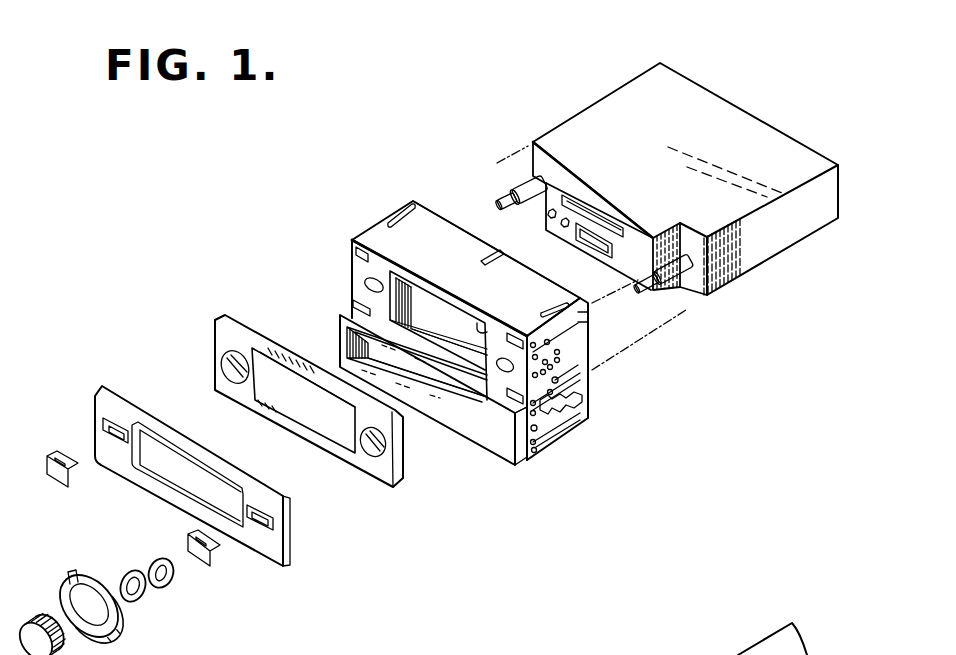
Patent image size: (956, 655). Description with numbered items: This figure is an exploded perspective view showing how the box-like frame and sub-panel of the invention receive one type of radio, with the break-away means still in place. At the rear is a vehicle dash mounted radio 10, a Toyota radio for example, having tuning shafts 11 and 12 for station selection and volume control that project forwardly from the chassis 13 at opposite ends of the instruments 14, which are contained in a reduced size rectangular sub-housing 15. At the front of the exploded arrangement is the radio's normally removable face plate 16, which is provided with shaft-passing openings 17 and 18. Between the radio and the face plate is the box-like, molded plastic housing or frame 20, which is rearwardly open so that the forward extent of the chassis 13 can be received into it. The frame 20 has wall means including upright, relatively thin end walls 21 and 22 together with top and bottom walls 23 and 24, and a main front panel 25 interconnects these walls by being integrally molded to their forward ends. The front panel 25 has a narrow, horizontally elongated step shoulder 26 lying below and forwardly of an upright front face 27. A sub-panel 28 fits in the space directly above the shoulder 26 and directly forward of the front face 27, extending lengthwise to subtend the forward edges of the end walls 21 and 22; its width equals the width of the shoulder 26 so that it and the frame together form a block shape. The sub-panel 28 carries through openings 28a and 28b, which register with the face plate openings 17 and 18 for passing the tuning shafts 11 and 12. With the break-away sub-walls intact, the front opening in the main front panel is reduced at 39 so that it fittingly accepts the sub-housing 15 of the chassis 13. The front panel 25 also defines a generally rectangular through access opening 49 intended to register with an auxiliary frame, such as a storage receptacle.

The vehicle dash mounted radio 10 is at (565, 74).
The tuning shaft 11 is at (505, 203).
The tuning shaft 12 is at (658, 289).
The chassis 13 is at (800, 145).
The instruments 14 is at (533, 222).
The sub-housing 15 is at (577, 180).
The face plate 16 is at (140, 502).
The shaft-passing opening 17 is at (104, 431).
The shaft-passing opening 18 is at (267, 520).
The box-like housing or frame 20 is at (370, 201).
The end wall 21 is at (398, 300).
The end wall 22 is at (571, 371).
The top wall 23 is at (427, 225).
The bottom wall 24 is at (442, 342).
The main front panel 25 is at (340, 332).
The step shoulder 26 is at (503, 404).
The front face 27 is at (352, 278).
The sub-panel 28 is at (215, 325).
The through opening 28a is at (233, 362).
The through opening 28b is at (366, 445).
The front opening 39 is at (480, 324).
The access opening 49 is at (452, 393).